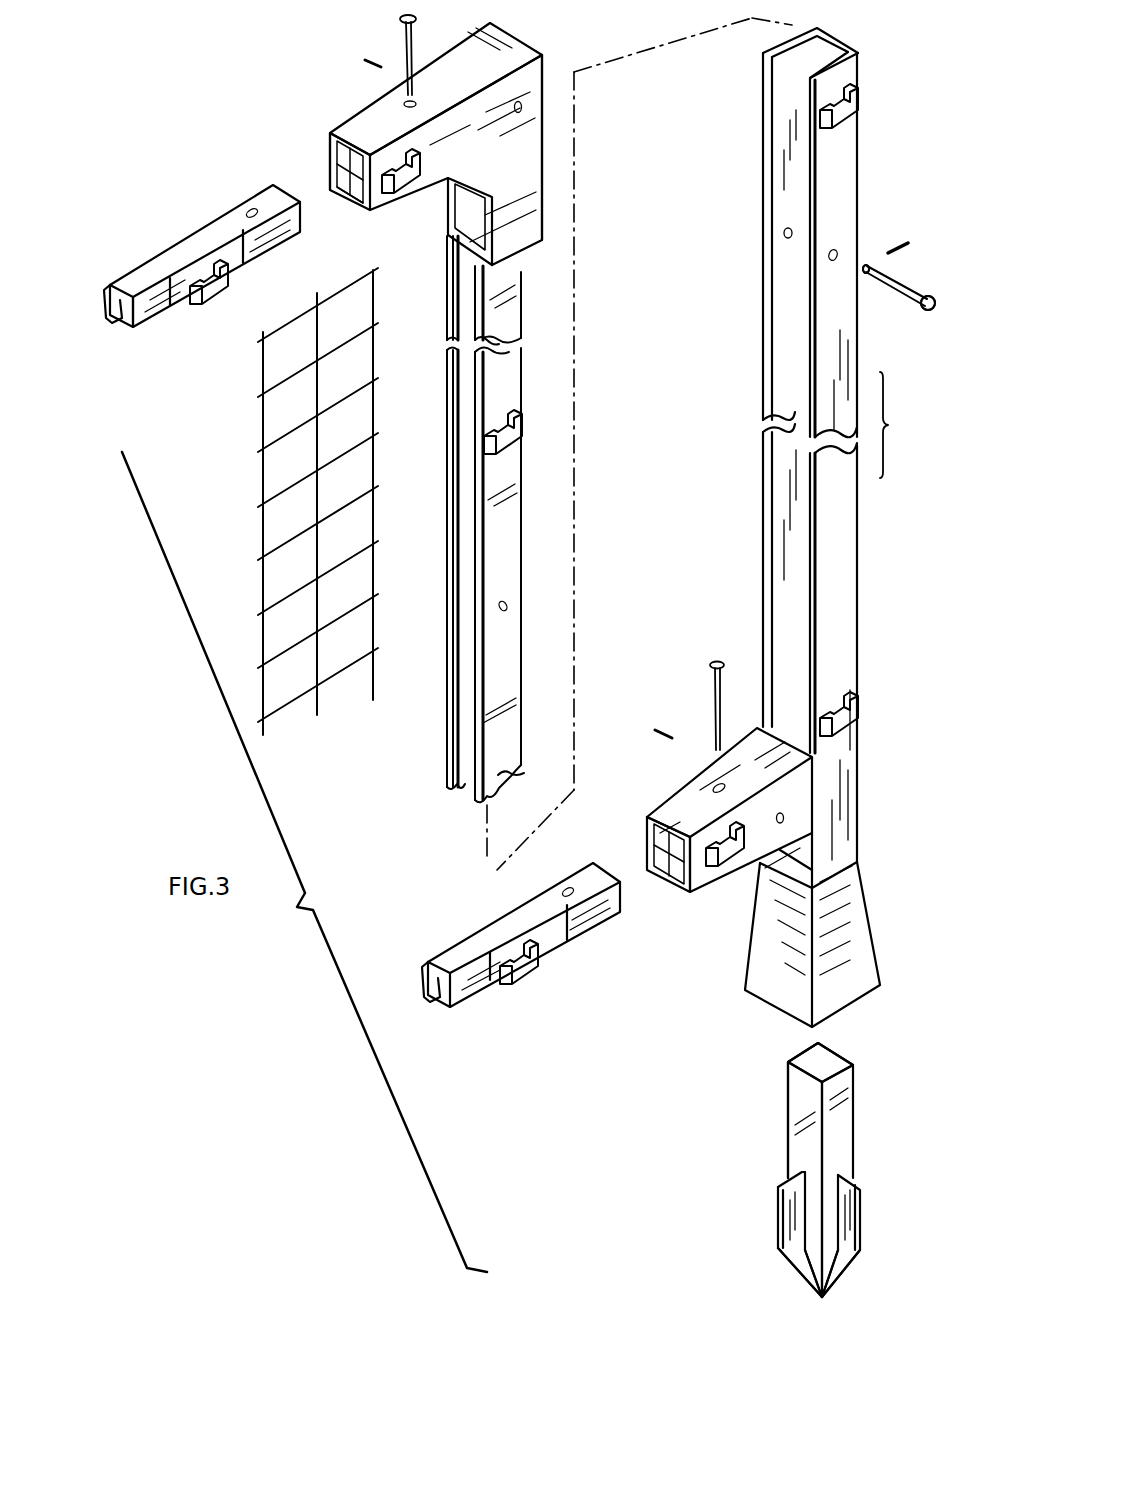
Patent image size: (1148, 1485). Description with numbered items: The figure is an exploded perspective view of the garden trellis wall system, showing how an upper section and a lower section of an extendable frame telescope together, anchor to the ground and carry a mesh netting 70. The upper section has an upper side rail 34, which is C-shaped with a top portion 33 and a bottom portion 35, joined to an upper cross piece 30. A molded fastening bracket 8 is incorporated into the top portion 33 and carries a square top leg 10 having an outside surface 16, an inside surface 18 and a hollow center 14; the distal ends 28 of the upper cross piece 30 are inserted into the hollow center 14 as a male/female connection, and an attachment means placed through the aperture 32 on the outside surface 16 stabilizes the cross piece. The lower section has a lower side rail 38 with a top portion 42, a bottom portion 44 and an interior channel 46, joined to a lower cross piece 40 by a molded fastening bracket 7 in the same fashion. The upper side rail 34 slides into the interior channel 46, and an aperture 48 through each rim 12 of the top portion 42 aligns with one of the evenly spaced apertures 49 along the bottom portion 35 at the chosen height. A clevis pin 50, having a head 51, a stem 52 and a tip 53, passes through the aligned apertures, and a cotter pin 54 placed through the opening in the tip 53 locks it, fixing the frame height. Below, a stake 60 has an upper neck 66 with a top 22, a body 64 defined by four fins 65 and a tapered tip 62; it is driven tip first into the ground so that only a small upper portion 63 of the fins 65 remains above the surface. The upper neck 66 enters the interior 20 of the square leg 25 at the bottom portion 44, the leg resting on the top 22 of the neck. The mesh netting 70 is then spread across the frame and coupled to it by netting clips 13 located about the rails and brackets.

The fastening bracket 7 is at (705, 898).
The fastening bracket 8 is at (537, 70).
The top leg 10 is at (450, 60).
The rim 12 is at (808, 340).
The netting clips 13 is at (395, 185).
The hollow center 14 is at (340, 160).
The outside surface 16 is at (436, 144).
The inside surface 18 is at (345, 185).
The interior 20 is at (783, 1017).
The top 22 is at (835, 1055).
The square leg 25 is at (866, 952).
The distal ends 28 is at (267, 203).
The upper cross piece 30 is at (143, 272).
The aperture 32 is at (403, 105).
The top portion 33 is at (515, 305).
The upper side rails 34 is at (512, 538).
The bottom portion 35 is at (508, 775).
The lower side rails 38 is at (845, 625).
The lower cross piece 40 is at (548, 940).
The top portion 42 is at (838, 150).
The bottom portion 44 is at (845, 835).
The interior channel 46 is at (772, 550).
The aperture 48 is at (838, 252).
The apertures 49 is at (508, 608).
The clevis pin 50 is at (898, 282).
The head 51 is at (926, 311).
The stem 52 is at (893, 411).
The tip 53 is at (846, 272).
The cotter pin 54 is at (891, 250).
The stake 60 is at (845, 1125).
The tapered tip 62 is at (826, 1297).
The upper portion 63 is at (777, 1185).
The body 64 is at (840, 1190).
The fins 65 is at (798, 1258).
The upper neck 66 is at (790, 1094).
The mesh netting 70 is at (258, 530).